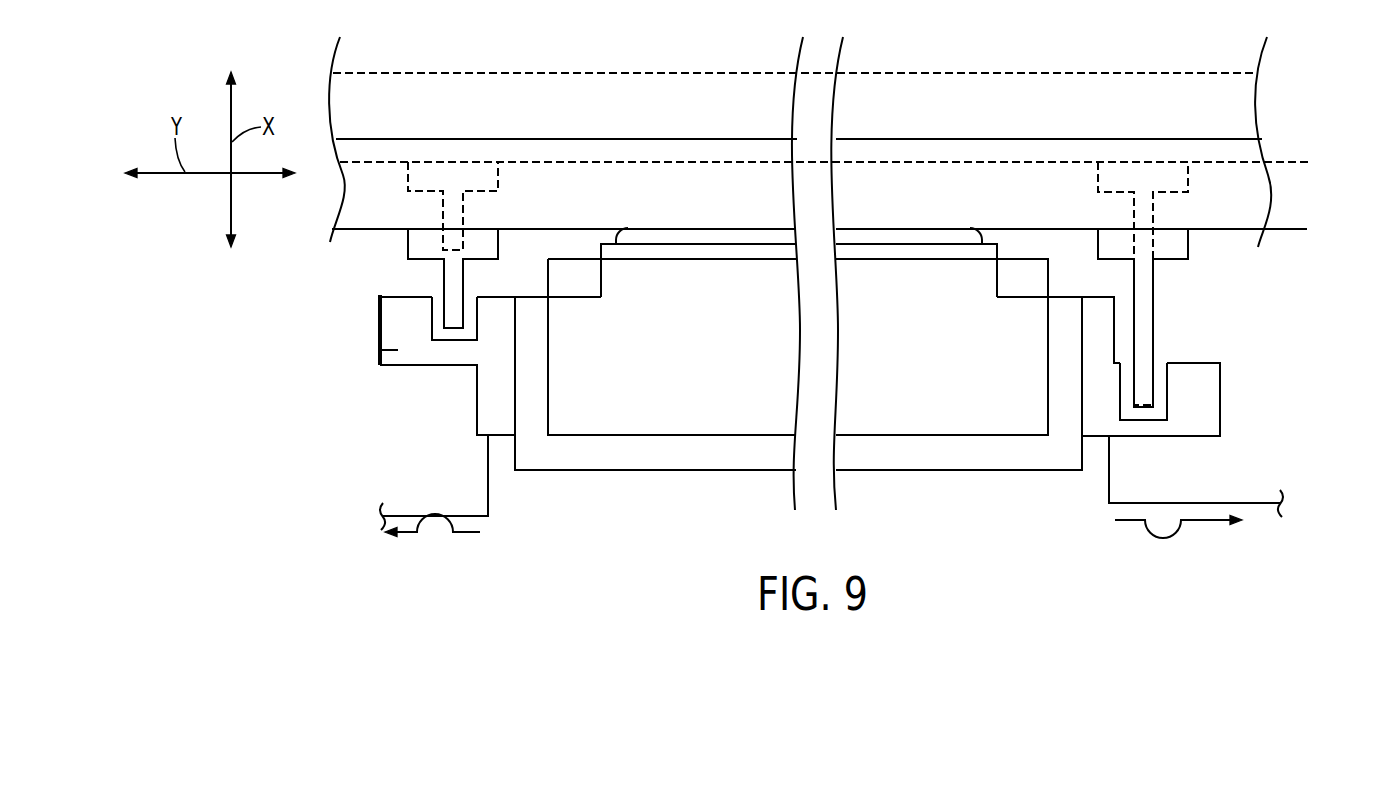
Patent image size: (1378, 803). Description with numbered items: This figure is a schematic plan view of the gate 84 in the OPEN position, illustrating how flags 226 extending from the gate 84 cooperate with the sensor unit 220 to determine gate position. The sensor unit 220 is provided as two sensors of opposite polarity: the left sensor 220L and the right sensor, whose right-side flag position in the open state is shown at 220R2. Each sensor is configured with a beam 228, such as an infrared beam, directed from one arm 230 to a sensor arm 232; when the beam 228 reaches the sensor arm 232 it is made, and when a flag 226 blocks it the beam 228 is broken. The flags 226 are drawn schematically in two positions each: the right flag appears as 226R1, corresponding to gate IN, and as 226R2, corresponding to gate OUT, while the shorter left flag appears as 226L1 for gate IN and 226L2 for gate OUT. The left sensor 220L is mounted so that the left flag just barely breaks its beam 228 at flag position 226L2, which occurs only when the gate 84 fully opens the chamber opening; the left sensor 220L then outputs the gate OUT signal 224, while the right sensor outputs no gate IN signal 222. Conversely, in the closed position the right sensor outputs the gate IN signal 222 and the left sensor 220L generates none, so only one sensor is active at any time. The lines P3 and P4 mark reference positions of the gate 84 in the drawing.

The gate 84 is at (1213, 73).
The plane P4 is at (1295, 160).
The plane P3 is at (835, 231).
The flag 226 is at (362, 247).
The left flag position corresponding to gate IN 226L1 is at (442, 203).
The left flag position corresponding to gate OUT 226L2 is at (423, 252).
The right flag position corresponding to gate IN 226R1 is at (1178, 172).
The right flag position corresponding to gate OUT 226R2 is at (1173, 244).
The sensor beam 228 is at (425, 318).
The arm 230 is at (387, 340).
The second (left) sensor 220L is at (395, 360).
The right electrode portion 220R2 is at (1210, 410).
The sensor arm 232 is at (488, 325).
The sensor unit 220 is at (405, 427).
The gate OUT signal 224 is at (437, 550).
The gate IN signal 222 is at (1163, 537).